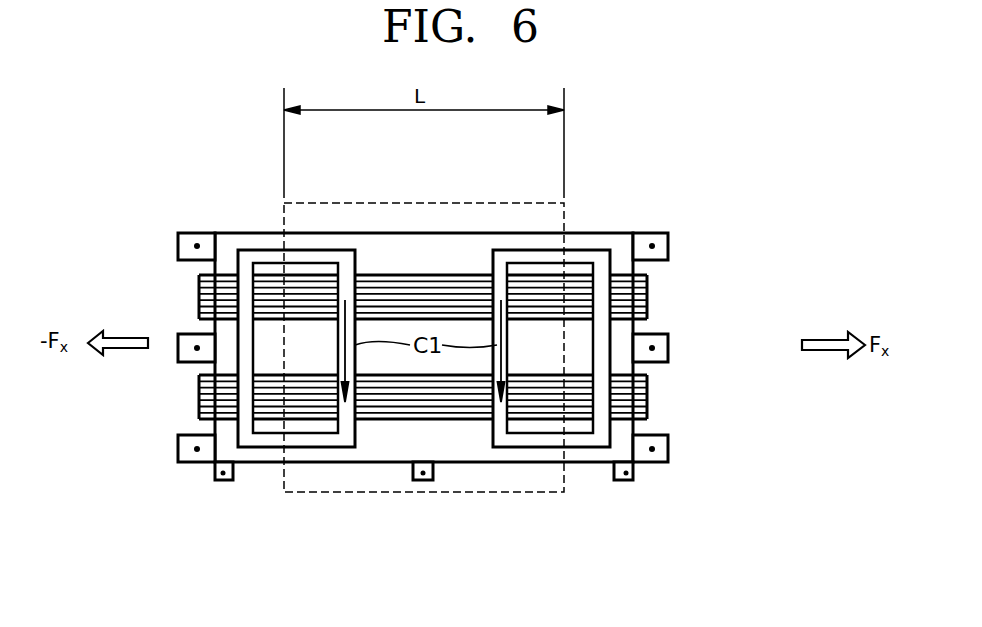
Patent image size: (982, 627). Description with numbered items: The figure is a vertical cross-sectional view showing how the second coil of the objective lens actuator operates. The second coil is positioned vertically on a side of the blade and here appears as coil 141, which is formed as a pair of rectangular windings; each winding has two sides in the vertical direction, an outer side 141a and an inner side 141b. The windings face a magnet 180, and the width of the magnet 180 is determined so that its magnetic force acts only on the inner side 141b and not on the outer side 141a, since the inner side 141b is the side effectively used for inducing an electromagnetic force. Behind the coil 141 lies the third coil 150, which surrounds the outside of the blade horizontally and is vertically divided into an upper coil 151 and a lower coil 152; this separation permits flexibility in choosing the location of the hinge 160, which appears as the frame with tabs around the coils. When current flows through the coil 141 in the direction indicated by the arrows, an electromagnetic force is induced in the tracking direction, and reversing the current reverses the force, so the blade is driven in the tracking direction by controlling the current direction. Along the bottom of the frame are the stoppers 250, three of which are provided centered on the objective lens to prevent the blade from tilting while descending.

The coil 141 is at (425, 325).
The outer side of the second coil 141a is at (249, 275).
The inner side of the second coil 141b is at (345, 280).
The third coil 150 is at (496, 347).
The upper coil 151 is at (648, 300).
The lower coil 152 is at (460, 397).
The hinge 160 is at (655, 233).
The magnet 180 is at (422, 203).
The stopper 250 is at (628, 480).